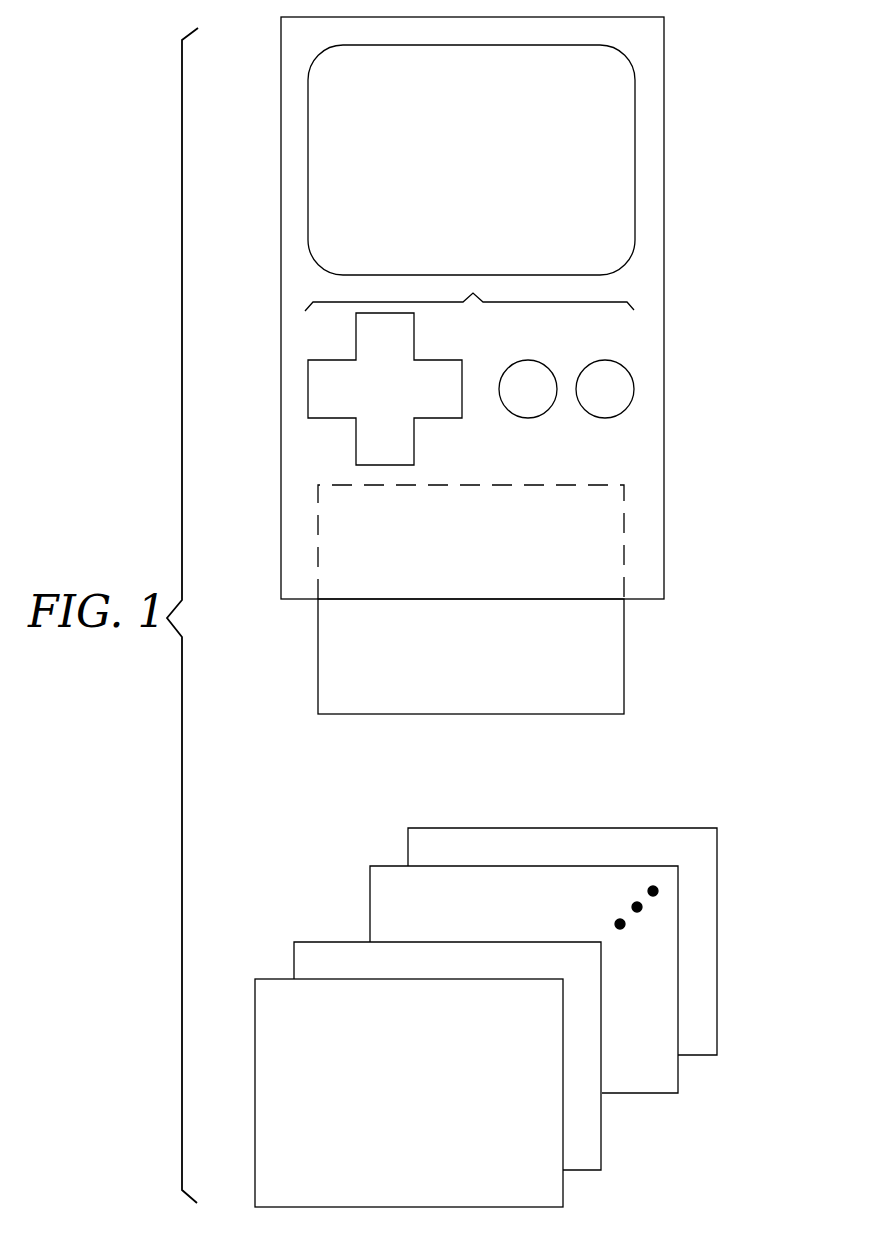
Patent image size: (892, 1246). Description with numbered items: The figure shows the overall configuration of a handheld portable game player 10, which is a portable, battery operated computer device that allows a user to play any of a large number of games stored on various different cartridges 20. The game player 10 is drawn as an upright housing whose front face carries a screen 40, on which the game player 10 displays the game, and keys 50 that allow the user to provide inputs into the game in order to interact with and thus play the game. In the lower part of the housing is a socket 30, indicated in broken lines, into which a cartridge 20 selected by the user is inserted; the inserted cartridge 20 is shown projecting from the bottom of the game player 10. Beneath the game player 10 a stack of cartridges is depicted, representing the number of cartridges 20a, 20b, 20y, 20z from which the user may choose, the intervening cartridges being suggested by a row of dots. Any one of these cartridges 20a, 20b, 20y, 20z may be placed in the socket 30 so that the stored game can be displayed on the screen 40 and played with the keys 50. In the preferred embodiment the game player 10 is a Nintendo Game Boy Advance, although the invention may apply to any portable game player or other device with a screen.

The game player 10 is at (664, 288).
The cartridge 20 is at (593, 653).
The cartridge 20a is at (563, 1190).
The cartridge 20b is at (601, 1152).
The cartridge 20y is at (678, 1075).
The cartridge 20z is at (717, 1038).
The socket 30 is at (624, 485).
The screen 40 is at (630, 62).
The keys 50 is at (473, 293).